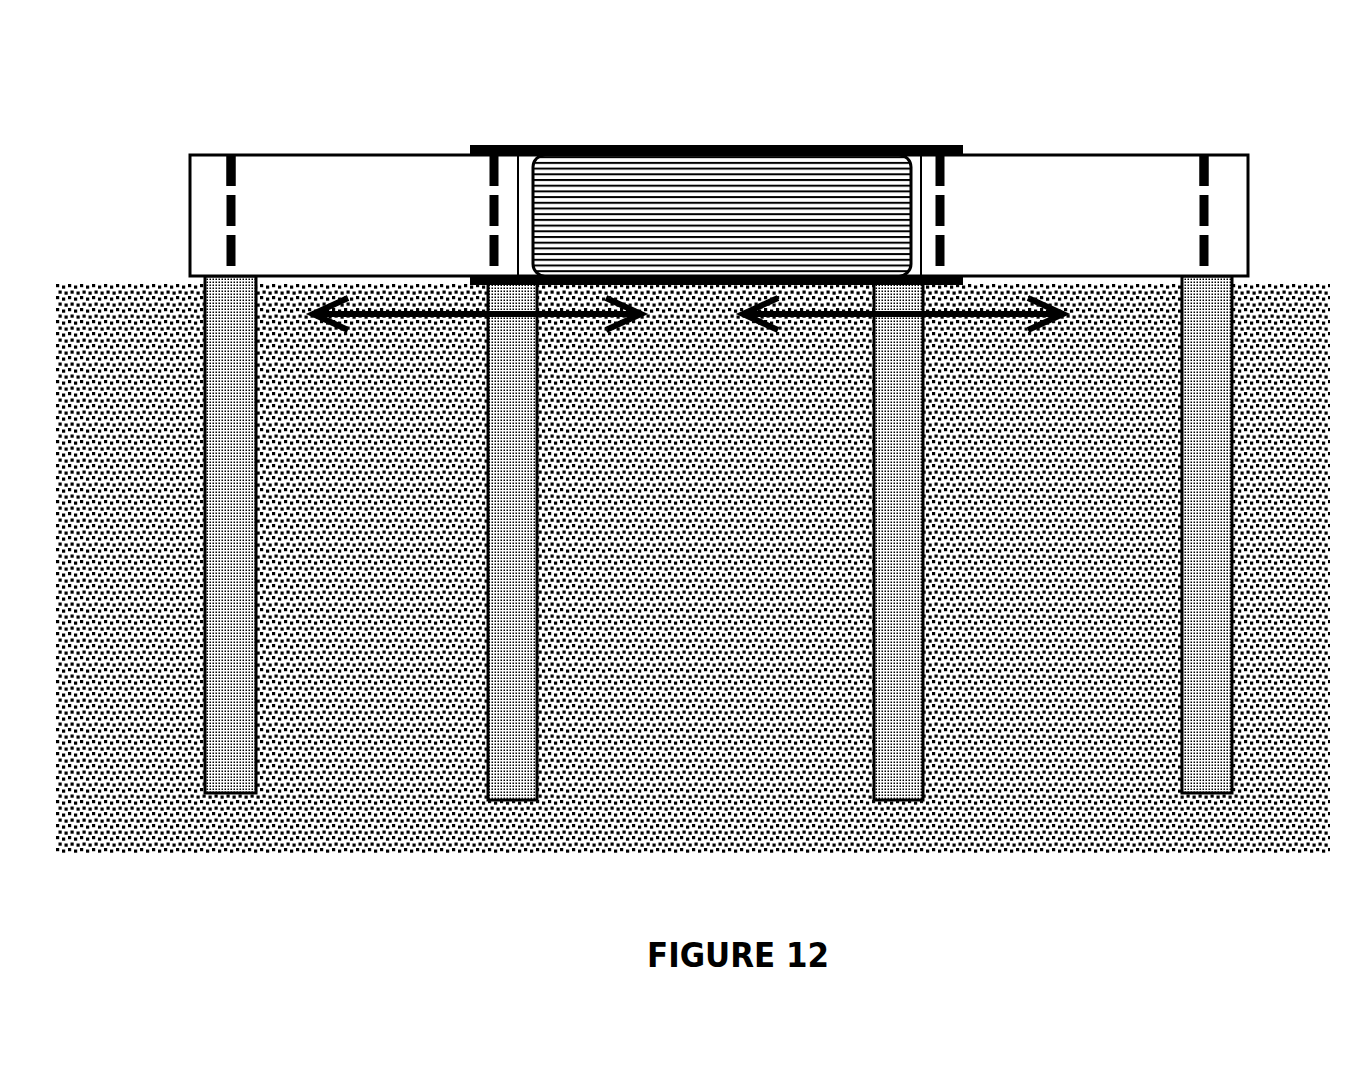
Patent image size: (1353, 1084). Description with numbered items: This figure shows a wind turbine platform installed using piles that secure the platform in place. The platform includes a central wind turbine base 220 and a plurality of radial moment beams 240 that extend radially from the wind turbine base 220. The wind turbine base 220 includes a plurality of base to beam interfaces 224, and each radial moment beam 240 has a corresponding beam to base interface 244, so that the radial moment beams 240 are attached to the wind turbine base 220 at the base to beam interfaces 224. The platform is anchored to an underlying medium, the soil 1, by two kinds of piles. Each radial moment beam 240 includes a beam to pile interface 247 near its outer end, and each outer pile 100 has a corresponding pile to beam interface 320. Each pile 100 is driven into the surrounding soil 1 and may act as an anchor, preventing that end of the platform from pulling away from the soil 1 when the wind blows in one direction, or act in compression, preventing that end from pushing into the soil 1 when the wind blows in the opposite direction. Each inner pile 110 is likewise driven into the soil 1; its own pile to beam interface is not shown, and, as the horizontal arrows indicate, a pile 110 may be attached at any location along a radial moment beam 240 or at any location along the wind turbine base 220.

The underlying medium (soil) 1 is at (966, 734).
The pile 100 is at (223, 360).
The pile 110 is at (503, 793).
The wind turbine base 220 is at (676, 228).
The base to beam interface 224 is at (508, 136).
The radial moment beam 240 is at (285, 193).
The beam to base interface 244 is at (480, 195).
The beam to pile interface 247 is at (223, 147).
The pile to beam interface 320 is at (217, 200).